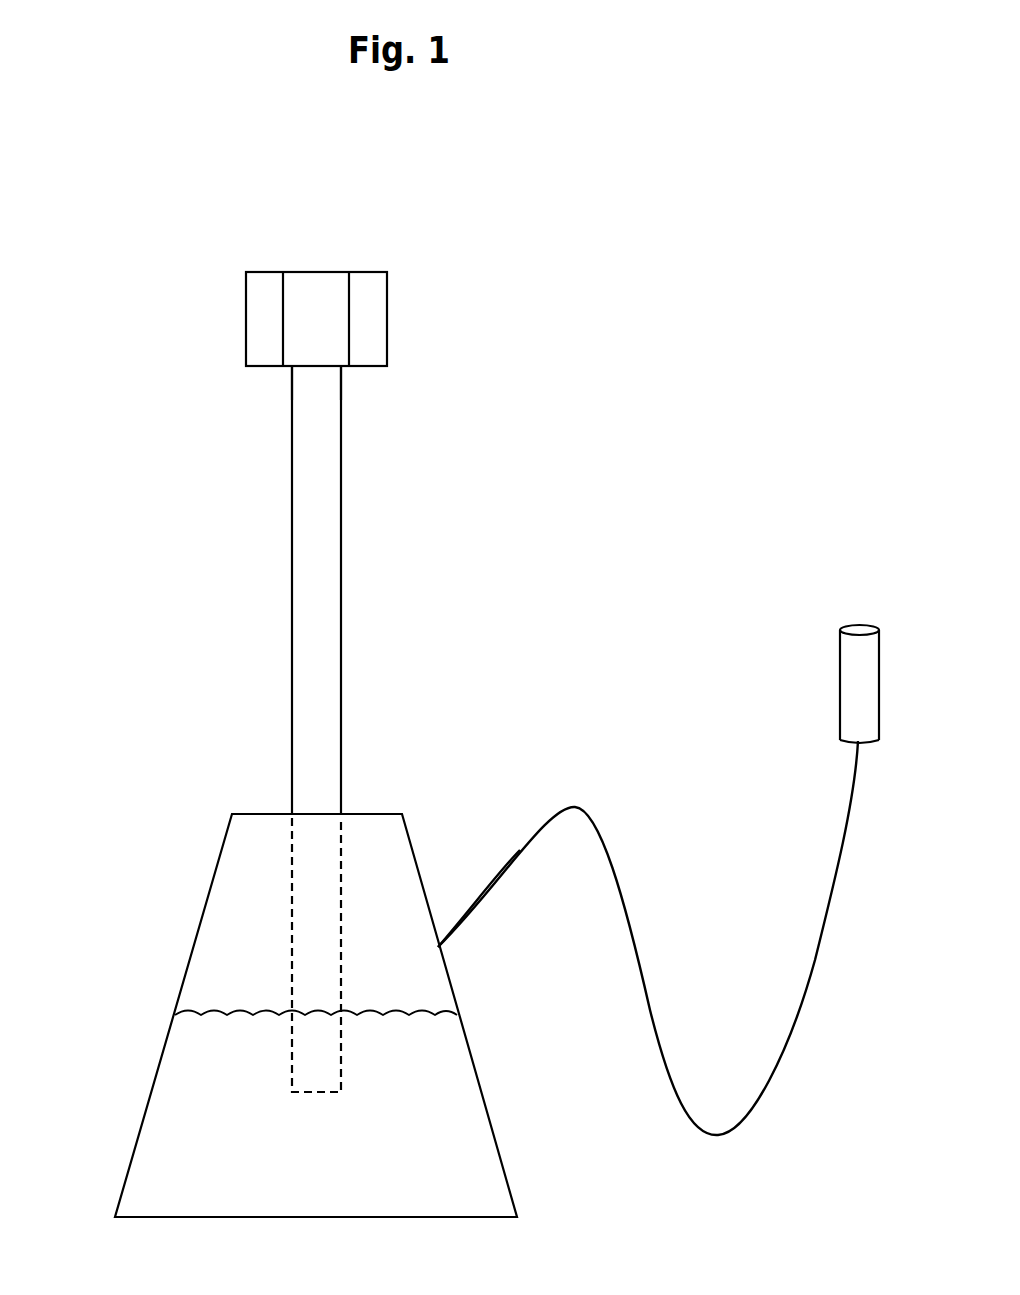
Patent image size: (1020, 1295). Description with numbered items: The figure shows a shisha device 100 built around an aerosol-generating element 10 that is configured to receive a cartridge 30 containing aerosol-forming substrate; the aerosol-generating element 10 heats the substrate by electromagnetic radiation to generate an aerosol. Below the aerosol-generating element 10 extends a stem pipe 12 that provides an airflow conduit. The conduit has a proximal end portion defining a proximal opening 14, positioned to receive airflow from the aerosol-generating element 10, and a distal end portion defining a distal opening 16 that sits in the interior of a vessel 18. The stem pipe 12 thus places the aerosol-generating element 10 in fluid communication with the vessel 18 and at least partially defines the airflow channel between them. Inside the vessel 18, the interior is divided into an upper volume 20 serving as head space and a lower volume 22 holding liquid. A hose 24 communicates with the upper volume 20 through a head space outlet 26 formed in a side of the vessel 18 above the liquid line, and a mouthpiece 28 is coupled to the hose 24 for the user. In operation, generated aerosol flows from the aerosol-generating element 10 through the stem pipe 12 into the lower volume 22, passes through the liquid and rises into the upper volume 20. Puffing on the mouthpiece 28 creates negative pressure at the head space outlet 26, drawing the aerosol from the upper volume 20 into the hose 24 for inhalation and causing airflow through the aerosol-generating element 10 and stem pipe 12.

The shisha device 100 is at (615, 387).
The aerosol-generating element 10 is at (147, 260).
The cartridge 30 is at (300, 335).
The proximal opening 14 is at (307, 376).
The stem pipe 12 is at (290, 632).
The distal opening 16 is at (320, 1096).
The vessel 18 is at (518, 1145).
The upper volume 20 is at (242, 892).
The lower volume 22 is at (187, 1087).
The hose 24 is at (820, 943).
The head space outlet 26 is at (442, 893).
The mouthpiece 28 is at (840, 710).